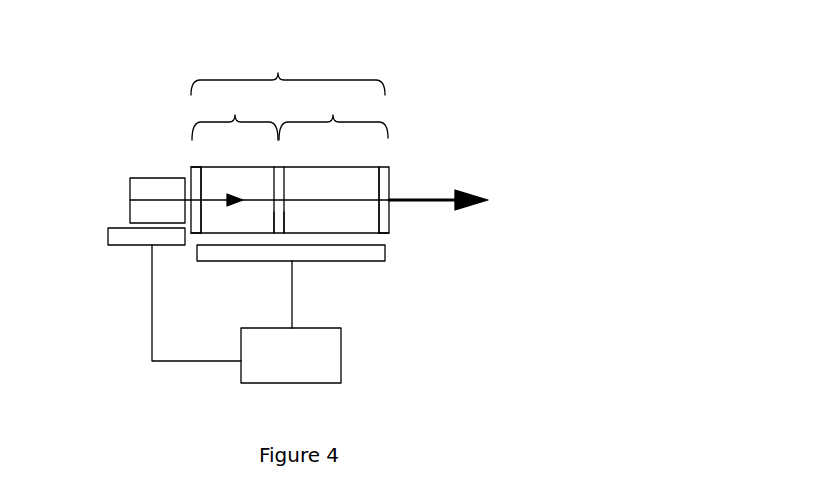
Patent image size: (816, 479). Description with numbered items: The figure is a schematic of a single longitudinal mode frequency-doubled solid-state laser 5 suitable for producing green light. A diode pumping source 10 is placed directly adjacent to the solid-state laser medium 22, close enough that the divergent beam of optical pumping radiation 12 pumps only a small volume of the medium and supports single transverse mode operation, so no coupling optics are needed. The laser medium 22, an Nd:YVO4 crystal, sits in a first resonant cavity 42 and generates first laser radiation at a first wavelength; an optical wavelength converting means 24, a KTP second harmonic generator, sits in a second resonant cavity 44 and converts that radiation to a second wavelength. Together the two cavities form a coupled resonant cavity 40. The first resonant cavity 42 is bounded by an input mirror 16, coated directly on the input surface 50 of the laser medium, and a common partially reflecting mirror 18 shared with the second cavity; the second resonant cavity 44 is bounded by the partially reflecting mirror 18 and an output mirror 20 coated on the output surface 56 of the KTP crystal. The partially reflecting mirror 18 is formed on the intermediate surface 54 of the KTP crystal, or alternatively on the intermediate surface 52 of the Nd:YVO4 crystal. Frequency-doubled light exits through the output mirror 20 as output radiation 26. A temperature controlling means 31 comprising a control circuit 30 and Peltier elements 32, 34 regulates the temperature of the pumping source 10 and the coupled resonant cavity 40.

The single longitudinal mode frequency-converted solid-state laser 5 is at (622, 51).
The diode pumping source 10 is at (130, 187).
The optical pumping radiation 12 is at (219, 202).
The input mirror 16 is at (200, 183).
The common partially reflecting mirror 18 is at (278, 188).
The output mirror 20 is at (385, 193).
The solid-state laser medium 22 is at (228, 173).
The optical wavelength converting means 24 is at (373, 168).
The output radiation 26 is at (477, 205).
The control circuit 30 is at (246, 314).
The temperature controlling means 31 is at (364, 379).
The Peltier element 32 is at (125, 238).
The Peltier element 34 is at (360, 255).
The coupled resonant cavity 40 is at (288, 72).
The first resonant cavity 42 is at (235, 116).
The second resonant cavity 44 is at (333, 116).
The input surface 50 is at (200, 222).
The intermediate surface 52 is at (272, 212).
The intermediate surface 54 is at (283, 212).
The output surface 56 is at (380, 222).